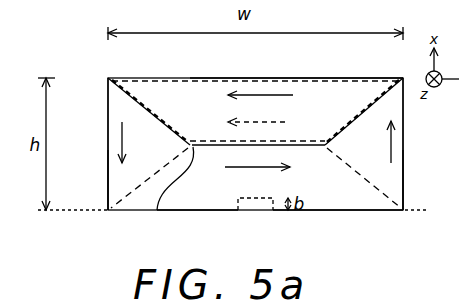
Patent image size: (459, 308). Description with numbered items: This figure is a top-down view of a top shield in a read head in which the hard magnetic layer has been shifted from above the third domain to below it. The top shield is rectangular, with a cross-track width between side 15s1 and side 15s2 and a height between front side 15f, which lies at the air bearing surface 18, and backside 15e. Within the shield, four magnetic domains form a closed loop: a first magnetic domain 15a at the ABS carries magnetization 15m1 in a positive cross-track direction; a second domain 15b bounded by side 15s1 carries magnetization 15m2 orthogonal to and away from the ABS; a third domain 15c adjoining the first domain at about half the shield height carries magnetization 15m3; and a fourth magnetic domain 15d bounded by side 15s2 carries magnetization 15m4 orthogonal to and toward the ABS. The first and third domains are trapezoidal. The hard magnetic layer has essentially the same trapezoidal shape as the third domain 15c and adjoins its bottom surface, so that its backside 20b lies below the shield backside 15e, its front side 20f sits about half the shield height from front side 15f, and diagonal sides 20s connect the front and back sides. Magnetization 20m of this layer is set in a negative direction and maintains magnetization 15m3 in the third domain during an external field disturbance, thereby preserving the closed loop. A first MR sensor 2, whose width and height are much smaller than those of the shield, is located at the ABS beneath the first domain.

The first MR sensor 2 is at (255, 211).
The ABS 18 is at (229, 210).
The first magnetic domain 15a is at (333, 211).
The second domain 15b is at (405, 180).
The third domain 15c is at (328, 86).
The fourth magnetic domain 15d is at (118, 181).
The backside 15e is at (235, 79).
The front side 15f is at (196, 211).
The side 15s1 is at (405, 123).
The side 15s2 is at (108, 110).
The magnetization 15m1 is at (257, 159).
The magnetization 15m2 is at (367, 142).
The magnetization 15m3 is at (256, 130).
The magnetization 15m4 is at (144, 142).
The diagonal sides 20s is at (143, 104).
The backside 20b is at (168, 79).
The front side 20f is at (157, 210).
The magnetization 20m is at (260, 103).